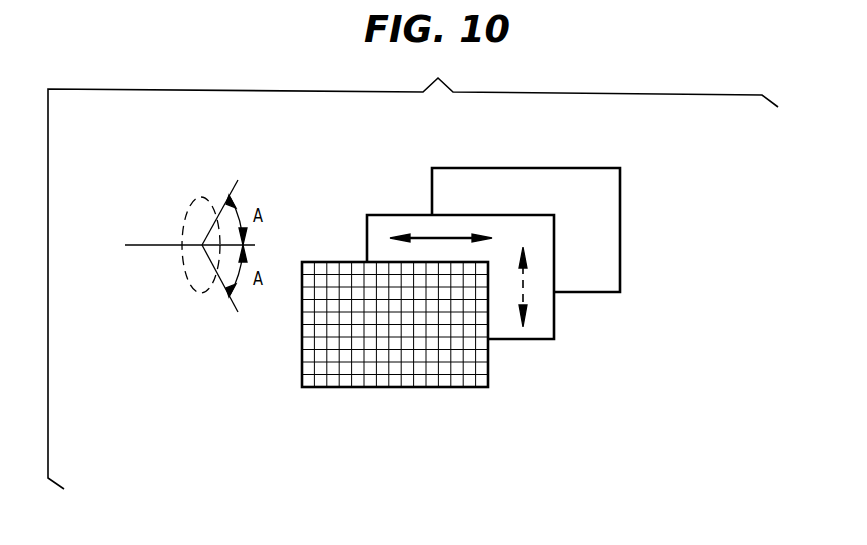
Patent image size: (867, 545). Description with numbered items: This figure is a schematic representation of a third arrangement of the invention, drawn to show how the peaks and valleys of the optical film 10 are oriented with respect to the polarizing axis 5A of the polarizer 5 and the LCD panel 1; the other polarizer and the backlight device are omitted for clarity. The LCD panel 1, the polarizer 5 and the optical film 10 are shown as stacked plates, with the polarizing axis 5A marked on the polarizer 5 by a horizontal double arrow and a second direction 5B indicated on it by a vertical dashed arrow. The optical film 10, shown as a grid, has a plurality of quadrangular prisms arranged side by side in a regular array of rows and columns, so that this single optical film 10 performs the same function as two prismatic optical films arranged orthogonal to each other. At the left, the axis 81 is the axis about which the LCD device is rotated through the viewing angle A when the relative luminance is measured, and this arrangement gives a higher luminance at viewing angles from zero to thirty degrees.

The LCD panel 1 is at (620, 275).
The polarizer 5 is at (557, 317).
The polarizing axis 5A is at (420, 236).
The vertical axis direction of optical film 5B is at (527, 281).
The optical film 10 is at (490, 369).
The axis 81 is at (147, 245).